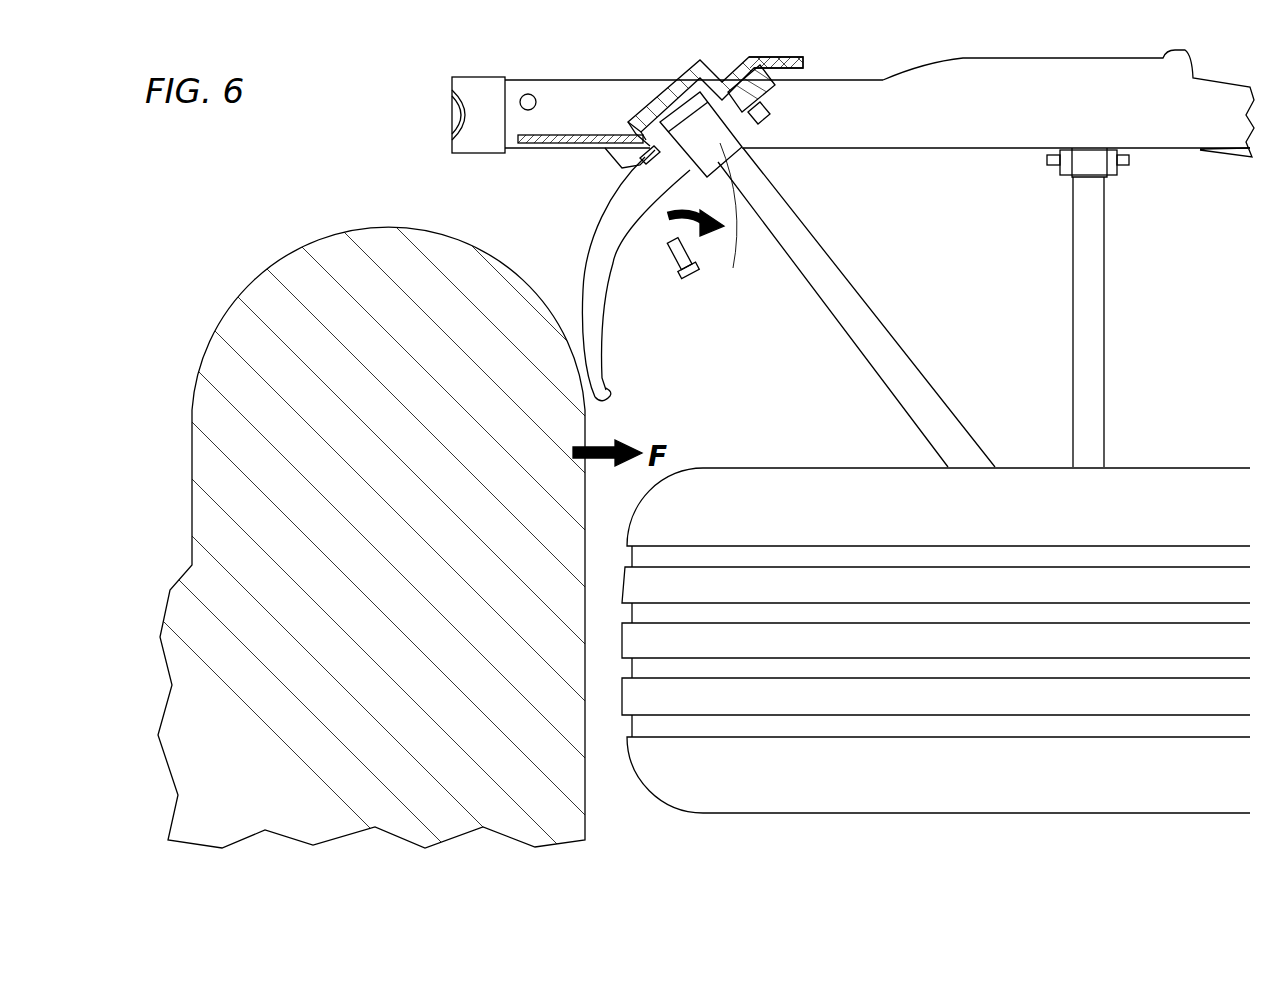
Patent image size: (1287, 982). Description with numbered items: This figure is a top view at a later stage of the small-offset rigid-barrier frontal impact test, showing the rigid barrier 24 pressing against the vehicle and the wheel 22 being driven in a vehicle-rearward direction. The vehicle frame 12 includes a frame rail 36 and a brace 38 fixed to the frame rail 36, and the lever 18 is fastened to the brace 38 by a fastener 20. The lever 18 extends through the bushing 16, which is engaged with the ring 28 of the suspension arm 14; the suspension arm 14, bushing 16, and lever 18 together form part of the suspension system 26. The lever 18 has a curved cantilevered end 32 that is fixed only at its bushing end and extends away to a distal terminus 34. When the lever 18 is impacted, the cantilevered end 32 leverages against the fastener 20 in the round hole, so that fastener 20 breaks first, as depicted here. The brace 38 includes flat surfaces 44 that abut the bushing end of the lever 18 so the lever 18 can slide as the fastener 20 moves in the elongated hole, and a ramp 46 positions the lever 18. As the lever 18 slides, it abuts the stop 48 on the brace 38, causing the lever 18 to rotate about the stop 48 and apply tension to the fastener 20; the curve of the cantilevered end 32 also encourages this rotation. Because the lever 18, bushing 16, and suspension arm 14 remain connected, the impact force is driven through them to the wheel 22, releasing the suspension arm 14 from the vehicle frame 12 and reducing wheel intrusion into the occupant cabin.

The vehicle frame 12 is at (625, 103).
The suspension arm 14 is at (885, 355).
The bushing 16 is at (727, 147).
The lever 18 is at (578, 291).
The fastener 20 is at (687, 282).
The wheel 22 is at (693, 785).
The rigid barrier 24 is at (297, 268).
The suspension system 26 is at (940, 295).
The ring 28 is at (735, 220).
The cantilevered end 32 is at (643, 367).
The distal terminus 34 is at (610, 398).
The frame rail 36 is at (1018, 72).
The brace 38 is at (667, 107).
The flat surfaces 44 is at (768, 90).
The ramp 46 is at (613, 157).
The stop 48 is at (799, 60).